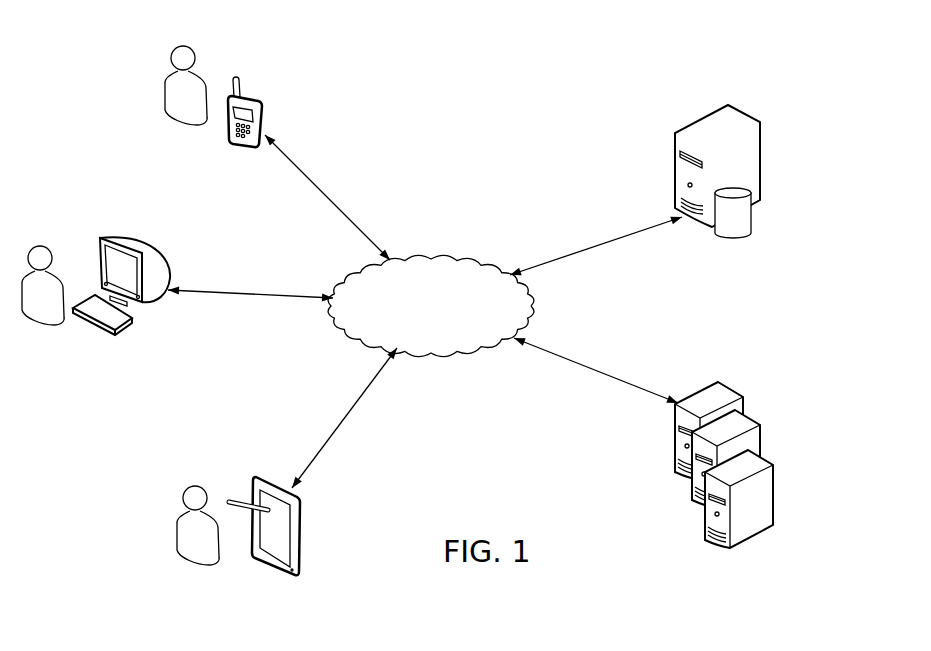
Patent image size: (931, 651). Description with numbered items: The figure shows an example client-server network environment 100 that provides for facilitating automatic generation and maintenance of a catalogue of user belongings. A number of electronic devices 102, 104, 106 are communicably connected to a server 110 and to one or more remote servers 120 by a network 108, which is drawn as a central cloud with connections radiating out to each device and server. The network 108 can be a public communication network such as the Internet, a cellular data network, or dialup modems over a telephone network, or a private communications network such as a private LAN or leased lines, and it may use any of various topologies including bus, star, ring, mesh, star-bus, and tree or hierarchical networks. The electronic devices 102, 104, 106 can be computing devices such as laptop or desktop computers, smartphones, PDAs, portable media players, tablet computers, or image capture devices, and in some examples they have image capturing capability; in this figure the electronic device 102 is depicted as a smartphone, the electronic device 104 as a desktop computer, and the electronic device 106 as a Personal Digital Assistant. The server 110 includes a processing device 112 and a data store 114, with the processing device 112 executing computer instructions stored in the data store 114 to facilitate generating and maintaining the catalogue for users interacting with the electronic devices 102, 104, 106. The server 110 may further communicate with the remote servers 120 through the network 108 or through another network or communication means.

The network environment 100 is at (512, 85).
The electronic device 102 is at (253, 97).
The electronic device 104 is at (168, 265).
The electronic device 106 is at (260, 483).
The network 108 is at (430, 262).
The server 110 is at (675, 240).
The processing device 112 is at (743, 113).
The data store 114 is at (752, 233).
The remote servers 120 is at (673, 525).